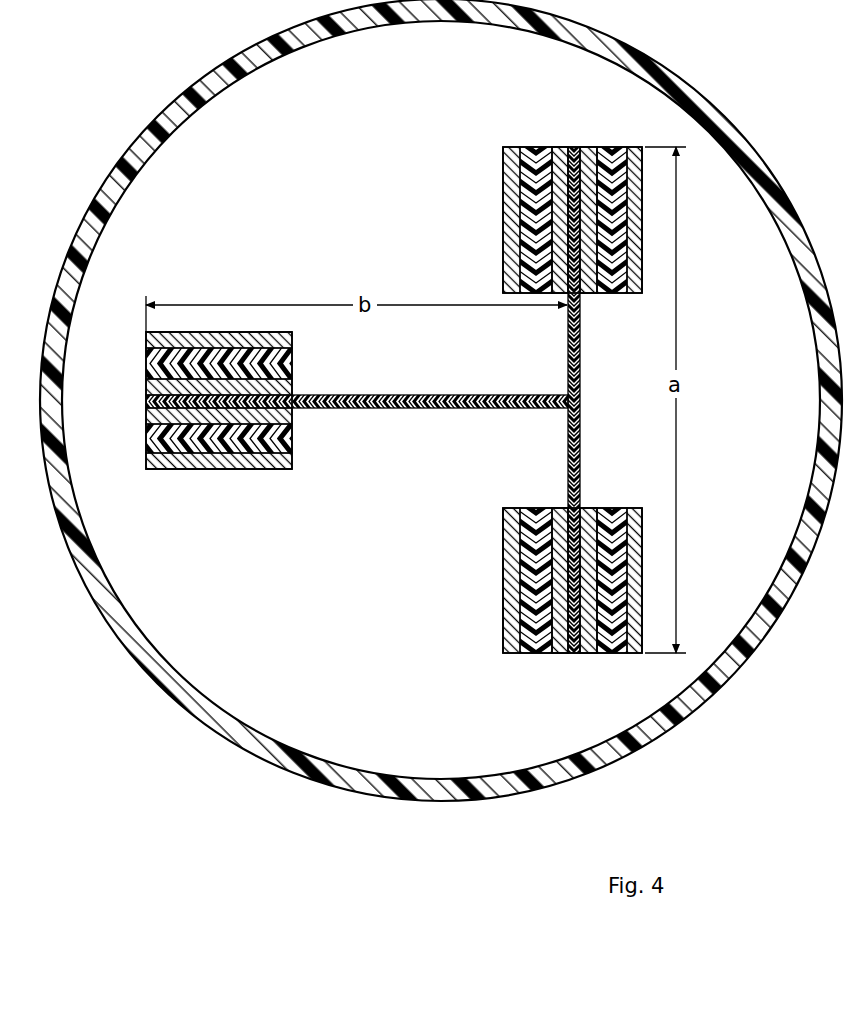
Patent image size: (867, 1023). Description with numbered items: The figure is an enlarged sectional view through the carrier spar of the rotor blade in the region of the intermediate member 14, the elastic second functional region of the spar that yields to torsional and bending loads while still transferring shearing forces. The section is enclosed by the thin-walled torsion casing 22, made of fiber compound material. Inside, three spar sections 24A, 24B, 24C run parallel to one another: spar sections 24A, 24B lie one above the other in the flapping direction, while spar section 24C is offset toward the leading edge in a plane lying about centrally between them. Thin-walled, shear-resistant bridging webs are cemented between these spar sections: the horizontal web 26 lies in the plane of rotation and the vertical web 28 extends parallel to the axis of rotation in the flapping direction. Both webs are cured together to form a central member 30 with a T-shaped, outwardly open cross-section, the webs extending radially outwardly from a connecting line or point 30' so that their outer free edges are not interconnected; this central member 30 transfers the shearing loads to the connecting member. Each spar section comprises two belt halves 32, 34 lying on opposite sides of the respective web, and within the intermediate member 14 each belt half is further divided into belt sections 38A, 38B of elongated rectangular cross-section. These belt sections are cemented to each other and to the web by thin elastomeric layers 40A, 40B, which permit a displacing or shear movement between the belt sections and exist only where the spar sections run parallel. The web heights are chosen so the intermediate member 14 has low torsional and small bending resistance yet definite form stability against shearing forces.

The intermediate member 14 is at (360, 214).
The torsion casing 22 is at (815, 480).
The spar section 24A is at (606, 147).
The spar section 24B is at (534, 656).
The spar section 24C is at (147, 444).
The horizontal web 26 is at (498, 393).
The vertical web 28 is at (583, 432).
The central member 30 is at (497, 443).
The connecting line or point 30' is at (607, 379).
The belt half 32 is at (502, 199).
The belt half 34 is at (646, 204).
The belt section 38A is at (152, 340).
The belt section 38B is at (156, 384).
The elastomeric layer 40A is at (156, 360).
The elastomeric layer 40B is at (558, 150).